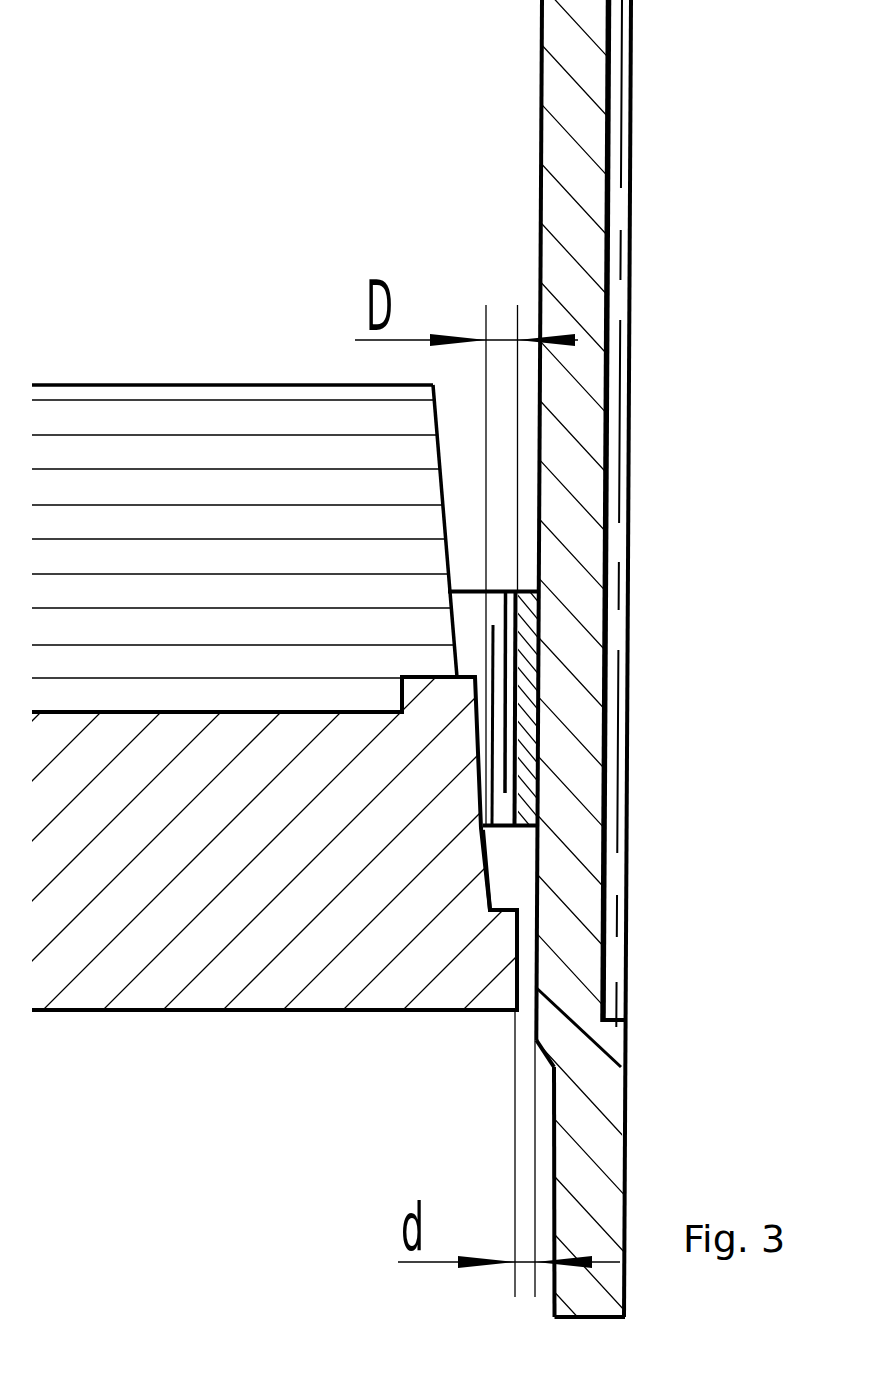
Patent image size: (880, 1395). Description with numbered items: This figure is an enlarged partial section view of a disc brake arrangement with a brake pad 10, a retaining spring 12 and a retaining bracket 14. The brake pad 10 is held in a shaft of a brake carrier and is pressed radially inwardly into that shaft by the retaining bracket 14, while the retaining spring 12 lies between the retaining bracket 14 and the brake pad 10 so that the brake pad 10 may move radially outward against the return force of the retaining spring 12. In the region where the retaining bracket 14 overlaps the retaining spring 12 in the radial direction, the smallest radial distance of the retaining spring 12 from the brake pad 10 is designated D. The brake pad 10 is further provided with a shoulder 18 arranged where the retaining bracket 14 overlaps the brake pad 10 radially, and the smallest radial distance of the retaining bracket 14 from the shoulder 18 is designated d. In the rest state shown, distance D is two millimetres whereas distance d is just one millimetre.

The brake pad 10 is at (375, 1003).
The retaining spring 12 is at (527, 582).
The retaining bracket 14 is at (613, 1093).
The shoulder 18 is at (505, 907).